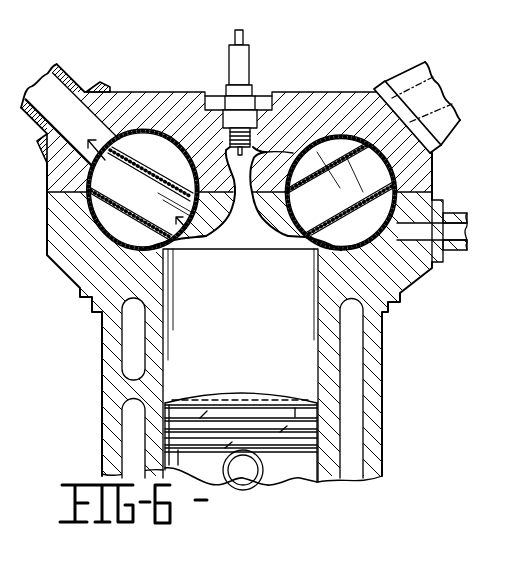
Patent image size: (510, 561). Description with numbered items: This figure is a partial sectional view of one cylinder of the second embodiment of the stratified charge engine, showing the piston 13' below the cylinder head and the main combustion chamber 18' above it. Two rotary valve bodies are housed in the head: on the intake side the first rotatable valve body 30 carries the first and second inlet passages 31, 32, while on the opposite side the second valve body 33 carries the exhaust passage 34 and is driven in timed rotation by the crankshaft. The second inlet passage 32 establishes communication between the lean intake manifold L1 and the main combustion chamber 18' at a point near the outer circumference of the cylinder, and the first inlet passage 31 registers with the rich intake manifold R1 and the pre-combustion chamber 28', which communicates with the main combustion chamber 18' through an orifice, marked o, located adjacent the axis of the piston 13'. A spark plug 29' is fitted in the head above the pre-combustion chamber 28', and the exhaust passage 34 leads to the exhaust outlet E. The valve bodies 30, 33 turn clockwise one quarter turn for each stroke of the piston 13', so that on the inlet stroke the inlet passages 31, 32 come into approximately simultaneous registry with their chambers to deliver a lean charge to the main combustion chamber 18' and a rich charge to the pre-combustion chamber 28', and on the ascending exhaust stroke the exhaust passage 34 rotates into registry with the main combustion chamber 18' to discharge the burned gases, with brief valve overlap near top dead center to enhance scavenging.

The piston 13' is at (241, 441).
The main combustion chamber 18' is at (239, 287).
The pre-combustion chamber 28' is at (244, 192).
The spark plug 29' is at (265, 92).
The first rotatable valve body 30 is at (338, 137).
The first inlet passage 31 is at (313, 221).
The second inlet passage 32 is at (372, 229).
The second valve body 33 is at (168, 137).
The exhaust passage 34 is at (143, 195).
The exhaust port E is at (70, 114).
The lean intake manifold L1 is at (417, 107).
The rich intake manifold R1 is at (432, 231).
The chamber center mark o is at (242, 224).